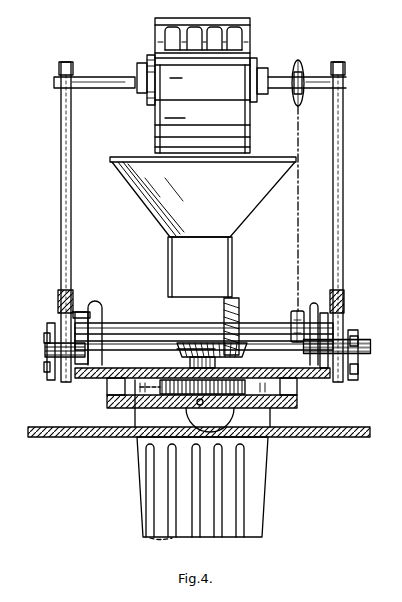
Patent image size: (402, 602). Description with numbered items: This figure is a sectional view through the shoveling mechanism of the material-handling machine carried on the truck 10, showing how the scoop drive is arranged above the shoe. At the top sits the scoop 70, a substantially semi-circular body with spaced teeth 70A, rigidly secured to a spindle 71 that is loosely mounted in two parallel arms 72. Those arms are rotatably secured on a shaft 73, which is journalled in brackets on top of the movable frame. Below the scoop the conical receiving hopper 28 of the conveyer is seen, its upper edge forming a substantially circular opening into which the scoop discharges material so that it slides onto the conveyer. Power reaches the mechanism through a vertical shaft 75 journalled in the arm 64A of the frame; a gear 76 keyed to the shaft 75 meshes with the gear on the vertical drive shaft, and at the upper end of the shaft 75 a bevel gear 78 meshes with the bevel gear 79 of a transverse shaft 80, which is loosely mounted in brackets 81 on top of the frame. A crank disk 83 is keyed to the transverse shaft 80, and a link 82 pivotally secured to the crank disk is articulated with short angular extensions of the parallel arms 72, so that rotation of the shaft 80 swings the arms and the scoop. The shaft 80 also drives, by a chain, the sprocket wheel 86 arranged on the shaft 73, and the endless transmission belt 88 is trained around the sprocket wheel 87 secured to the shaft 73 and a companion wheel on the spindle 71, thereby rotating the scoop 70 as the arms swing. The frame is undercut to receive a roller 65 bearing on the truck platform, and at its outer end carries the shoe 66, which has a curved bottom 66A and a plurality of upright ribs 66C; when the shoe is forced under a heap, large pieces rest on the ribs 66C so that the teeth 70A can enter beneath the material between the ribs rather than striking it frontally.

The truck 10 is at (345, 427).
The conical receiving hopper 28 is at (258, 197).
The arm of frame 64 64A is at (297, 403).
The roller 65 is at (220, 418).
The shoe 66 is at (266, 458).
The curved bottom 66A is at (252, 515).
The ribs 66C is at (148, 538).
The scoop 70 is at (250, 22).
The spaced teeth 70A is at (201, 48).
The spindle 71 is at (96, 87).
The parallel arms 72 is at (62, 194).
The shaft 73 is at (108, 348).
The vertical shaft 75 is at (215, 365).
The gear 76 is at (245, 387).
The bevel gear 78 is at (180, 350).
The bevel gear 79 is at (240, 318).
The transverse shaft 80 is at (130, 324).
The brackets 81 is at (86, 314).
The link 82 is at (47, 352).
The crank disk 83 is at (58, 300).
The sprocket wheel 86 is at (291, 320).
The sprocket wheel 87 is at (301, 78).
The endless transmission belt 88 is at (298, 222).